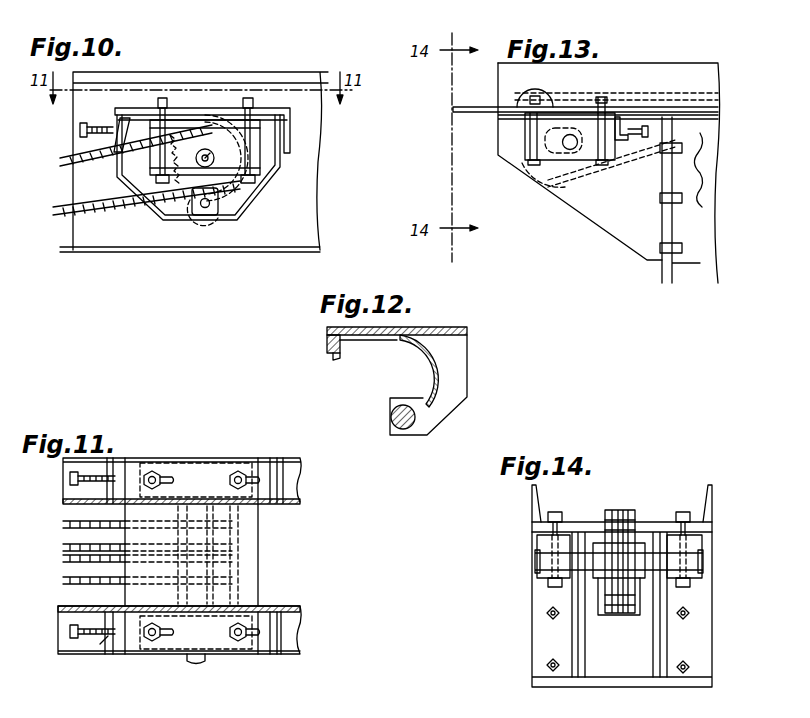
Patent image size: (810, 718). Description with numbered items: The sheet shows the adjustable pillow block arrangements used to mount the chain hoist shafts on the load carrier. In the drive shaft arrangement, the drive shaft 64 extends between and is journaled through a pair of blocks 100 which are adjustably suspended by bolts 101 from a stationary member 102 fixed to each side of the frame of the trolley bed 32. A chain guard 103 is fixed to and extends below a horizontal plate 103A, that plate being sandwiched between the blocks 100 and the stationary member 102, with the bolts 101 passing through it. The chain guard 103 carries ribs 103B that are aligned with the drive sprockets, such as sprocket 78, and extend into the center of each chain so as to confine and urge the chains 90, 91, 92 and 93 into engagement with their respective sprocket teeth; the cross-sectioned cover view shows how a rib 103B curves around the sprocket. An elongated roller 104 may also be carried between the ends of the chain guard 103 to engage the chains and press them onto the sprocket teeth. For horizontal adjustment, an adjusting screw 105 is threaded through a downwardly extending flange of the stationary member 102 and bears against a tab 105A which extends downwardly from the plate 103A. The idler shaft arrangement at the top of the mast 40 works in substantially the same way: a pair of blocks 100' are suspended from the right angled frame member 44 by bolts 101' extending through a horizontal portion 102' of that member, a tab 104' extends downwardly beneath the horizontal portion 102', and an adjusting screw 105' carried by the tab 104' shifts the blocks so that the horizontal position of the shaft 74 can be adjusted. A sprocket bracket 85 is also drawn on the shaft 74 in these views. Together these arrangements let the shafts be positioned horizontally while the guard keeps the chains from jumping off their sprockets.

In FIG. 10, the trolley bed 32 is at (270, 82).
In FIG. 11, the trolley bed 32 is at (295, 632).
In FIG. 13, the mast 40 is at (666, 262).
In FIG. 14, the mast 40 is at (712, 682).
In FIG. 13, the right angled frame member 44 is at (587, 203).
In FIG. 14, the right angled frame member 44 is at (700, 640).
In FIG. 10, the drive shaft 64 is at (202, 165).
In FIG. 11, the drive shaft 64 is at (199, 662).
In FIG. 13, the shaft 74 is at (571, 151).
In FIG. 14, the shaft 74 is at (700, 560).
In FIG. 10, the sprocket 78 is at (135, 160).
In FIG. 13, the sprocket bracket 85 is at (628, 139).
In FIG. 14, the sprocket bracket 85 is at (622, 617).
In FIG. 11, the chain 90 is at (63, 524).
In FIG. 11, the chain 91 is at (63, 548).
In FIG. 13, the chain 92 is at (640, 175).
In FIG. 11, the chain 92 is at (63, 560).
In FIG. 10, the chain 93 is at (175, 196).
In FIG. 11, the chain 93 is at (63, 582).
In FIG. 10, the block 100 is at (233, 158).
In FIG. 11, the block 100 is at (196, 573).
In FIG. 13, the block 100' is at (551, 147).
In FIG. 14, the block 100' is at (645, 573).
In FIG. 10, the bolt 101 is at (226, 137).
In FIG. 11, the bolt 101 is at (220, 539).
In FIG. 13, the bolt 101' is at (532, 163).
In FIG. 14, the bolt 101' is at (645, 611).
In FIG. 10, the stationary member 102 is at (202, 86).
In FIG. 11, the stationary member 102 is at (276, 572).
In FIG. 13, the horizontal portion 102' is at (585, 125).
In FIG. 14, the horizontal portion 102' is at (616, 512).
In FIG. 10, the chain guard 103 is at (255, 198).
In FIG. 12, the chain guard 103 is at (450, 390).
In FIG. 11, the chain guard 103 is at (235, 580).
In FIG. 10, the horizontal plate 103A is at (226, 112).
In FIG. 12, the horizontal plate 103A is at (376, 340).
In FIG. 11, the horizontal plate 103A is at (258, 581).
In FIG. 12, the rib 103B is at (430, 382).
In FIG. 11, the rib 103B is at (228, 527).
In FIG. 10, the elongated roller 104 is at (225, 213).
In FIG. 12, the elongated roller 104 is at (377, 417).
In FIG. 13, the tab 104' is at (628, 99).
In FIG. 10, the adjusting screw 105 is at (95, 117).
In FIG. 11, the adjusting screw 105 is at (68, 575).
In FIG. 13, the adjusting screw 105' is at (670, 106).
In FIG. 10, the tab 105A is at (112, 142).
In FIG. 12, the tab 105A is at (340, 356).
In FIG. 11, the tab 105A is at (104, 643).